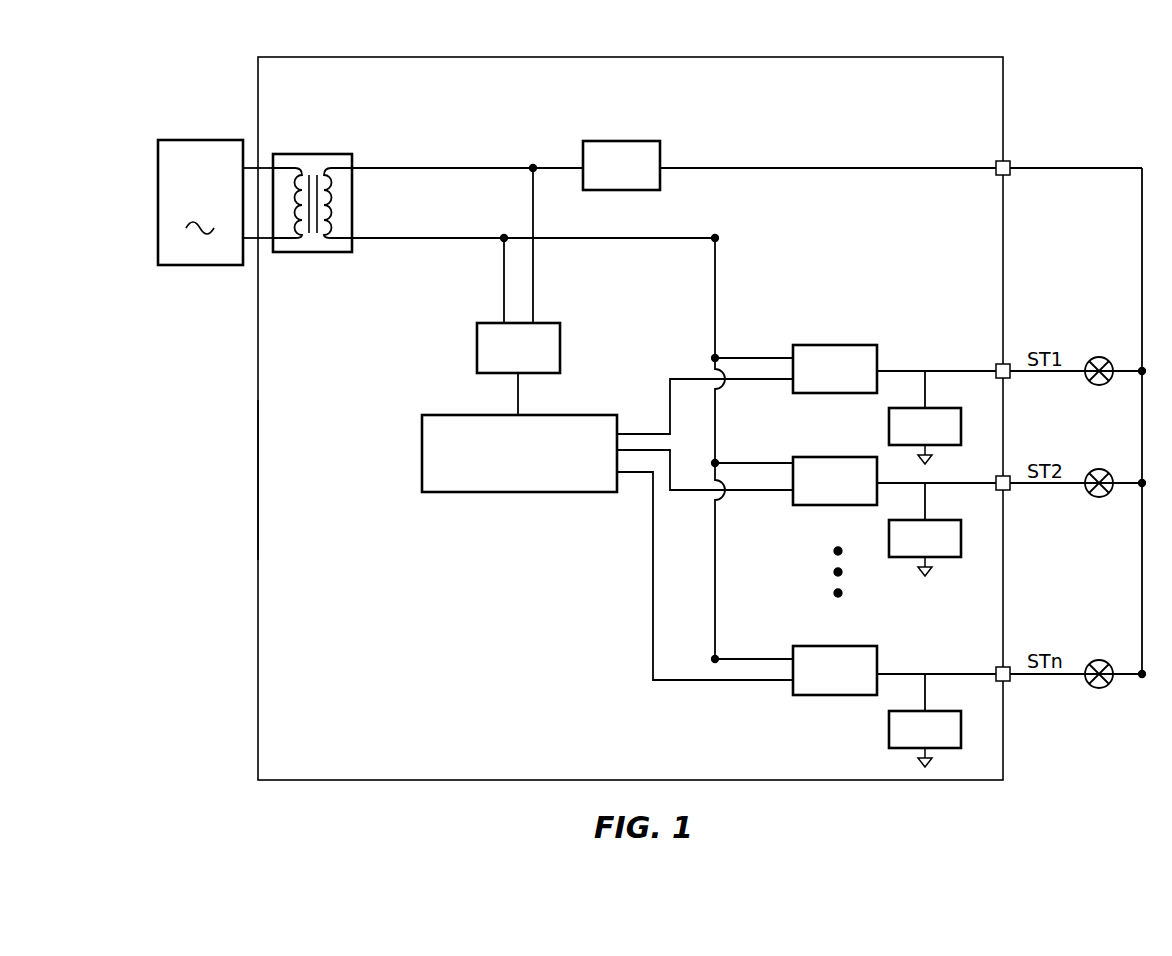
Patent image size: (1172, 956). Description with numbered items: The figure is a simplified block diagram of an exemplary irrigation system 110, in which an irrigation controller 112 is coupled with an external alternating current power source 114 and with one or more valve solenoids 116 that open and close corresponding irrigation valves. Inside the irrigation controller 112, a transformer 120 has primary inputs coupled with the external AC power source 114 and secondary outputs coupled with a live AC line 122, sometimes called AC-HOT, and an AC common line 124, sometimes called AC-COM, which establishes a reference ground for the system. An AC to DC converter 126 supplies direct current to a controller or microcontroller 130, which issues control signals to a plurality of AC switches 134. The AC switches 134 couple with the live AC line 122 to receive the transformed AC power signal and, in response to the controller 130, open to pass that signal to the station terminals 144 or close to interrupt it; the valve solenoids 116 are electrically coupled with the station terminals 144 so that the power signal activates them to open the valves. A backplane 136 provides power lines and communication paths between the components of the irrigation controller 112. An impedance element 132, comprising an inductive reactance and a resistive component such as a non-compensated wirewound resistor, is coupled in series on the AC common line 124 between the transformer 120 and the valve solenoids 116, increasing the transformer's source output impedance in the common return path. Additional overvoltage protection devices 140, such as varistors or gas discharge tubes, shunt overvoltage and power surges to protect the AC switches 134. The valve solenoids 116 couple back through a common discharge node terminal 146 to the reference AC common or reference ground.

The irrigation system 110 is at (1056, 80).
The irrigation controller 112 is at (348, 57).
The external alternating current (AC) power source 114 is at (200, 140).
The valve solenoids 116 is at (1090, 361).
The transformer 120 is at (316, 154).
The live AC line 122 is at (433, 242).
The AC common line 124 is at (497, 172).
The alternating current (AC) to direct current (DC) converter 126 is at (487, 323).
The controller 130 is at (452, 415).
The impedance element 132 is at (622, 192).
The AC switching devices 134 is at (835, 345).
The backplane 136 is at (272, 484).
The overvoltage protection devices 140 is at (936, 408).
The station terminals 144 is at (1008, 364).
The common discharge node (CDN) terminal 146 is at (1008, 161).